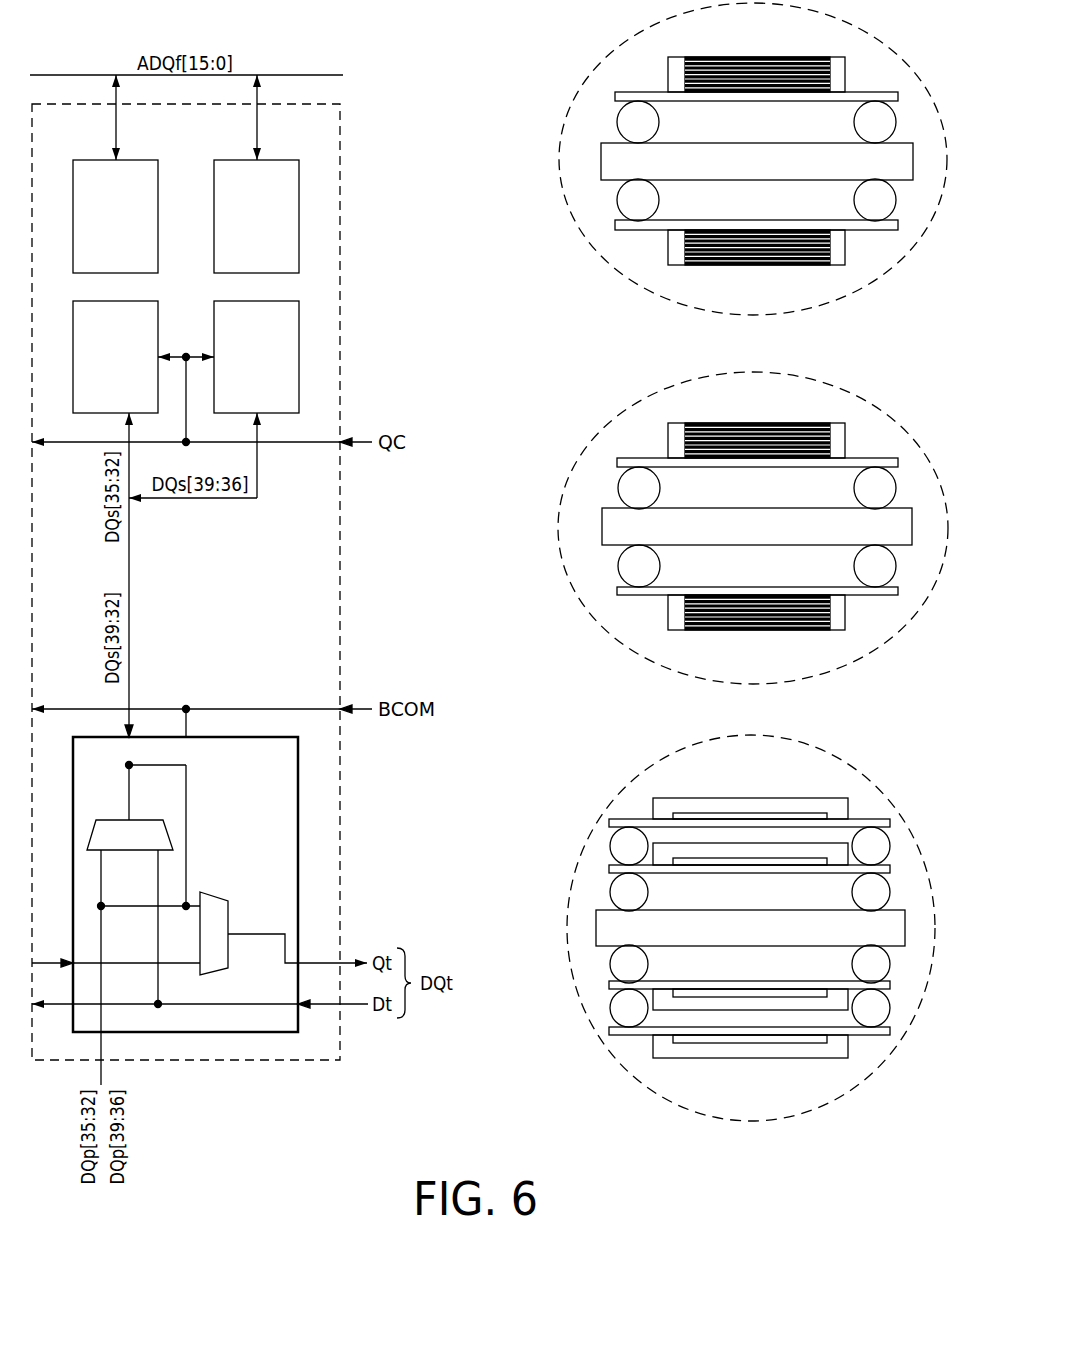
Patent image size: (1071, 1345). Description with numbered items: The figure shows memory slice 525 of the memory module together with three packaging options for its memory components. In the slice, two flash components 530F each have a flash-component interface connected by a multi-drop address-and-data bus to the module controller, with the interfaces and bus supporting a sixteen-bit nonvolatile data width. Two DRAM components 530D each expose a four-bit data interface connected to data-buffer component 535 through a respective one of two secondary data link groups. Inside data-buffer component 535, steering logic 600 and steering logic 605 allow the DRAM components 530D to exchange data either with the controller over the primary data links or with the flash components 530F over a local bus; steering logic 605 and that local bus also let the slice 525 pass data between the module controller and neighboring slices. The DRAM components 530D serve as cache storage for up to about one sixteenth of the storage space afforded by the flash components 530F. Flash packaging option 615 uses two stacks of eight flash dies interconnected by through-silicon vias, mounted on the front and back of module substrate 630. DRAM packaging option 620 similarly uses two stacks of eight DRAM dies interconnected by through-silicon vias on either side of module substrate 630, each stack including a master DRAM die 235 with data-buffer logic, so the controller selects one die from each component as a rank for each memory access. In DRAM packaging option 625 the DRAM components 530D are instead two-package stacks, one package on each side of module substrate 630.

The memory slice 525 is at (164, 131).
The flash component 530F is at (138, 270).
The DRAM component 530D is at (139, 351).
The data-buffer component 535 is at (224, 831).
The steering logic 600 is at (114, 848).
The steering logic 605 is at (223, 919).
The flash packaging option 615 is at (887, 48).
The DRAM packaging option 620 is at (888, 414).
The DRAM packaging option 625 is at (867, 782).
The module substrate 630 is at (848, 171).
The master DRAM 235 is at (697, 601).